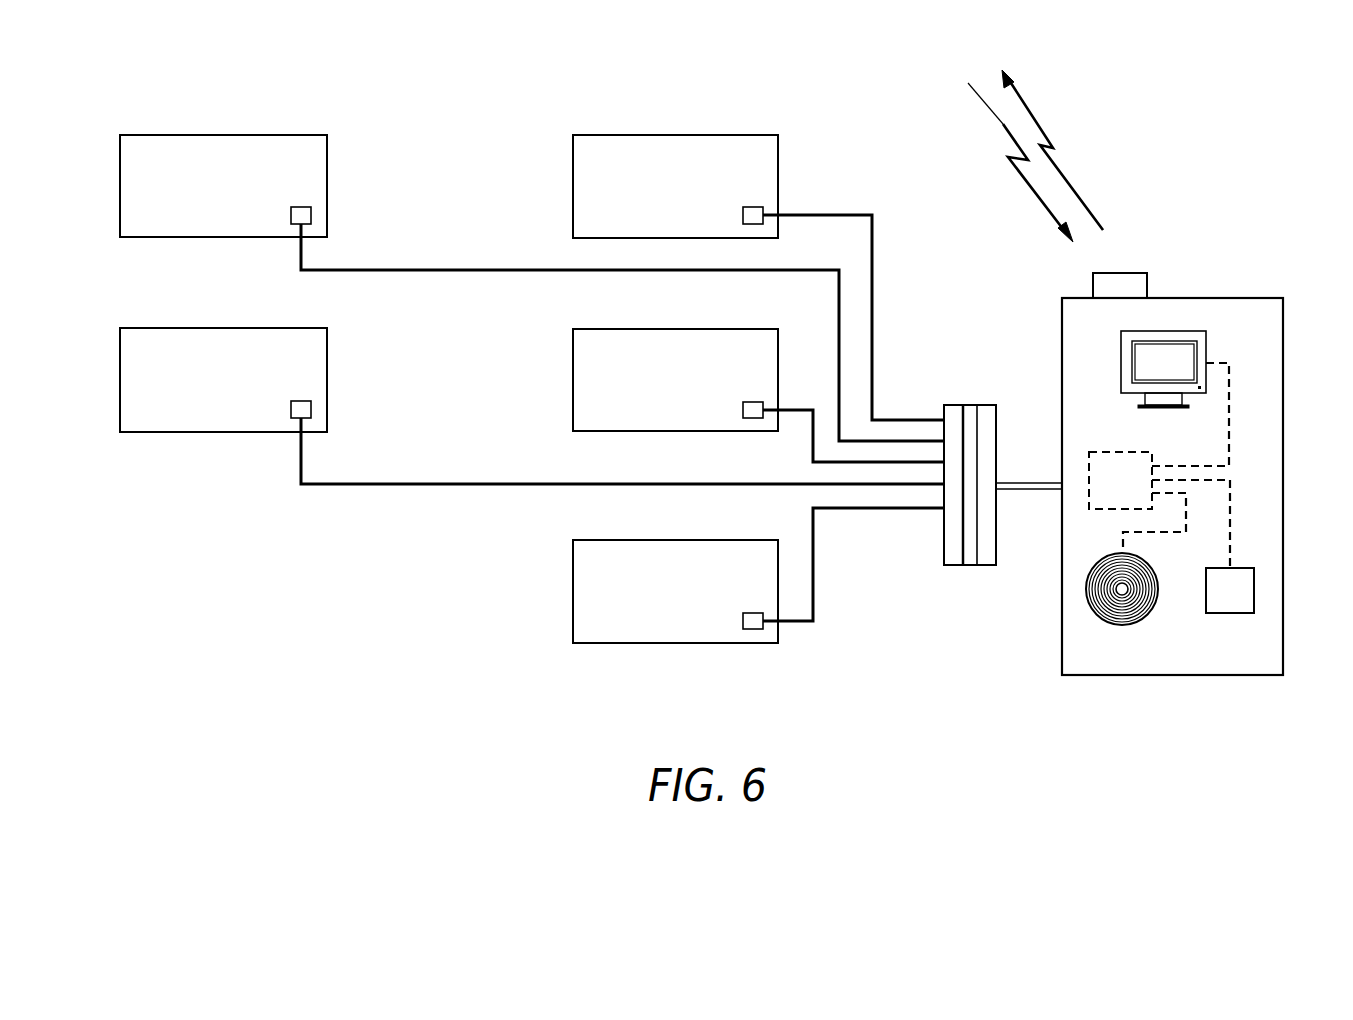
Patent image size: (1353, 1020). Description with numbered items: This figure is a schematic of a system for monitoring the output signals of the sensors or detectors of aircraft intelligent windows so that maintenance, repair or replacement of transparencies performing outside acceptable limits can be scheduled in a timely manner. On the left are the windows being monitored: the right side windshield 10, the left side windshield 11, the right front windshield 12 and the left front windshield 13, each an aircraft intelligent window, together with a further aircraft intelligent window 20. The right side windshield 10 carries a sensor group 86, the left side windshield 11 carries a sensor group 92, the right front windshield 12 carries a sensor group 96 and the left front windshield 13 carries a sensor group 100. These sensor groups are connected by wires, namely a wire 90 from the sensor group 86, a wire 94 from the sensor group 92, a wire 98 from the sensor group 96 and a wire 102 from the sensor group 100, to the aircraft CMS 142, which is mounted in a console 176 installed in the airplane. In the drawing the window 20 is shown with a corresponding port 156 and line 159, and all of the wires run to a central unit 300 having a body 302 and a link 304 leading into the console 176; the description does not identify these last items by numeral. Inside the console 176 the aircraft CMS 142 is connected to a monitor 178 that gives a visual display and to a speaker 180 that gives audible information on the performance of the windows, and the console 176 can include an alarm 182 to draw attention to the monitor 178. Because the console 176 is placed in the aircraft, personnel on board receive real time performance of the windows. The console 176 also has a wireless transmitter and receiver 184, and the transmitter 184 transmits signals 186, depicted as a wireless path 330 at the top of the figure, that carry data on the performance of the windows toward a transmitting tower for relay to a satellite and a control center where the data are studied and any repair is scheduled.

The right side windshield 10 is at (197, 128).
The left side windshield 11 is at (651, 128).
The right front windshield 12 is at (197, 321).
The left front windshield 13 is at (651, 322).
The aircraft intelligent window 20 is at (571, 566).
The sensor group 86 is at (298, 206).
The cable 90 is at (388, 268).
The sensor group 92 is at (750, 206).
The cable 94 is at (816, 213).
The sensor group 96 is at (298, 400).
The cable 98 is at (432, 482).
The sensor group 100 is at (750, 401).
The cable 102 is at (810, 447).
The aircraft CMS 142 is at (1121, 451).
The communication port of remote device 156 is at (750, 612).
The communication cable from remote device 159 is at (816, 552).
The console 176 is at (1207, 297).
The monitor 178 is at (1121, 363).
The speaker 180 is at (1158, 590).
The alarm 182 is at (1230, 614).
The wireless transmitter and receiver 184 is at (1093, 285).
The signals 186 is at (1050, 138).
The communication hub 300 is at (955, 404).
The hub housing 302 is at (968, 566).
The hub-to-computer connection 304 is at (1024, 481).
The wireless signal 330 is at (1000, 128).